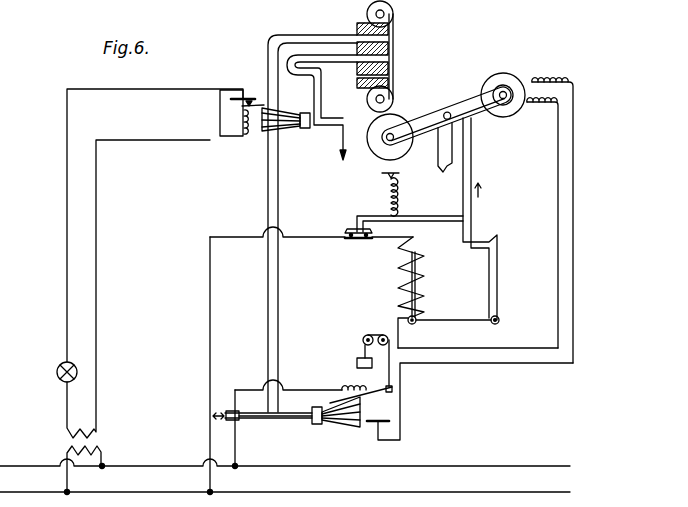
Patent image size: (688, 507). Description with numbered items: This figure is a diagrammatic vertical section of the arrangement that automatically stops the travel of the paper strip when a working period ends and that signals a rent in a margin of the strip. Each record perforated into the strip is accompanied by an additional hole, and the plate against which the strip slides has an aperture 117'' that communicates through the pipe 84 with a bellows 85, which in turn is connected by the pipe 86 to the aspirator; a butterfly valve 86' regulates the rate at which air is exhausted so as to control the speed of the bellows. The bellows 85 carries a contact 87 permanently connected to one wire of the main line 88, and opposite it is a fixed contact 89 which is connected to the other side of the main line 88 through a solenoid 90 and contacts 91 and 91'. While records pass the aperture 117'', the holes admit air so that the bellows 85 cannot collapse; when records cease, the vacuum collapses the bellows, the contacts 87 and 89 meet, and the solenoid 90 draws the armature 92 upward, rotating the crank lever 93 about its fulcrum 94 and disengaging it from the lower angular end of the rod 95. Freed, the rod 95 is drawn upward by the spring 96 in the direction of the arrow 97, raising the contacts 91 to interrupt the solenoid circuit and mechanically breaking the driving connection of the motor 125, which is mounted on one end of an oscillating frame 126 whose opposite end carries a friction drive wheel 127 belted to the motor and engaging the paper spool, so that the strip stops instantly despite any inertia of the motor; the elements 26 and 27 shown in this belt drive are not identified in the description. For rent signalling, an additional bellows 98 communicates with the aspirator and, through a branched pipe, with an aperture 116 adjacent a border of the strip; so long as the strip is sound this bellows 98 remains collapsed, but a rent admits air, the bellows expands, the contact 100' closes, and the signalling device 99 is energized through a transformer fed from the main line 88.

The upper pulley 26 is at (393, 13).
The lower pulley 27 is at (394, 98).
The pipe 84 is at (277, 383).
The bellows 85 is at (358, 360).
The pipe 86 is at (262, 393).
The butterfly valve 86' is at (275, 428).
The contact 87 is at (385, 392).
The main line 88 is at (160, 489).
The fixed contact 89 is at (384, 416).
The solenoid 90 is at (407, 262).
The contacts 91 is at (349, 218).
The contacts 91' is at (311, 243).
The armature 92 is at (369, 12).
The crank lever 93 is at (355, 79).
The fulcrum 94 is at (500, 320).
The rod 95 is at (471, 168).
The spring 96 is at (397, 201).
The arrow 97 is at (474, 208).
The bellows 98 is at (284, 129).
The signalling device 99 is at (57, 373).
The contact 100' is at (218, 99).
The aperture 116 is at (391, 58).
The aperture 117'' is at (417, 56).
The motor 125 is at (512, 78).
The oscillating frame 126 is at (451, 108).
The friction drive wheel 127 is at (384, 150).